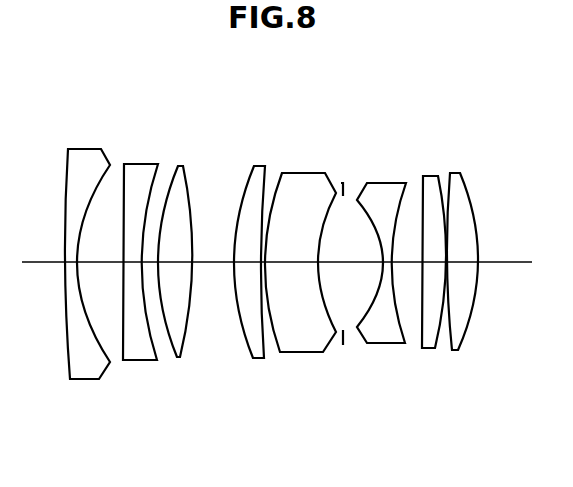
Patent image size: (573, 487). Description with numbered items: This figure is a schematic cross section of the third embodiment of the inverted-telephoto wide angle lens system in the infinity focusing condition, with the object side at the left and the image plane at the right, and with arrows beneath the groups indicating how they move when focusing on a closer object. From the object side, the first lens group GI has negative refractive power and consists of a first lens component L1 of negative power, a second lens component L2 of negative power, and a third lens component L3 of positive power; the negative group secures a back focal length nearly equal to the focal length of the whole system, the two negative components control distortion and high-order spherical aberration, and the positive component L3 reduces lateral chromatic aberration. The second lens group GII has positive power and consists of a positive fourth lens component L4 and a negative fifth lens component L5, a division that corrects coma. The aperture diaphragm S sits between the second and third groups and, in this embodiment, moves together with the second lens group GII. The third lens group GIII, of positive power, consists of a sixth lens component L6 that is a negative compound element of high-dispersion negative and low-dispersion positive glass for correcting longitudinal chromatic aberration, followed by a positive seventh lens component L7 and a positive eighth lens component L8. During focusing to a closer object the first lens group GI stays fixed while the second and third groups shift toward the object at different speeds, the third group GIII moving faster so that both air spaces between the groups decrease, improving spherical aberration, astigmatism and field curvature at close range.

The first lens component L1 is at (83, 152).
The second lens component L2 is at (142, 170).
The third lens component L3 is at (180, 166).
The fourth lens component L4 is at (260, 173).
The fifth lens component L5 is at (308, 177).
The aperture diaphragm S is at (345, 183).
The sixth lens component L6 is at (388, 183).
The seventh lens component L7 is at (433, 177).
The eighth lens component L8 is at (453, 175).
The first lens group GI is at (141, 265).
The second lens group GII is at (283, 264).
The third lens group GIII is at (435, 264).